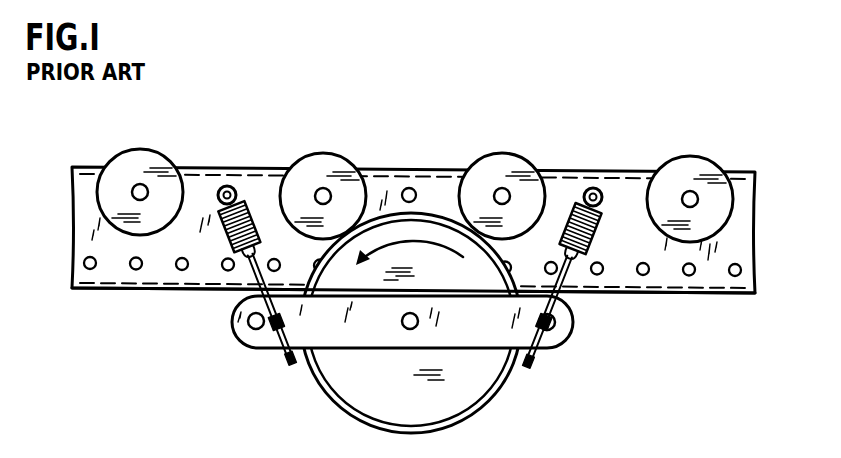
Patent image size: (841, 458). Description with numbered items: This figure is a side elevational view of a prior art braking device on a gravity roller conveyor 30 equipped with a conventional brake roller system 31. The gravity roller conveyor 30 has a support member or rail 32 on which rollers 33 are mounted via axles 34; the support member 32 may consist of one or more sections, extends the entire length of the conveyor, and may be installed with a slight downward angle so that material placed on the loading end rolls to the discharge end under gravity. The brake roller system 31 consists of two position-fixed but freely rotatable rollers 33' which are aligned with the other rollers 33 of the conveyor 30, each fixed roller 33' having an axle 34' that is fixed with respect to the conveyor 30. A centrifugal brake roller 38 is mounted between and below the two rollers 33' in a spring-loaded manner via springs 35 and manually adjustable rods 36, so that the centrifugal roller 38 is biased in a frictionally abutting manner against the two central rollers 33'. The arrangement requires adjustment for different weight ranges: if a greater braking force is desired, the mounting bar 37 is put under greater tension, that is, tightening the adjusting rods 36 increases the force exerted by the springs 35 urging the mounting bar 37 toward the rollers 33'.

The gravity roller conveyor 30 is at (444, 119).
The brake roller system 31 is at (335, 402).
The support member 32 is at (147, 293).
The rollers 33 is at (416, 182).
The position-fixed freely rotatable rollers 33' is at (416, 181).
The axles 34 is at (389, 171).
The axle 34' is at (386, 170).
The springs 35 is at (236, 232).
The manually adjustable rods 36 is at (283, 358).
The mounting bar 37 is at (397, 350).
The centrifugal brake roller 38 is at (478, 410).